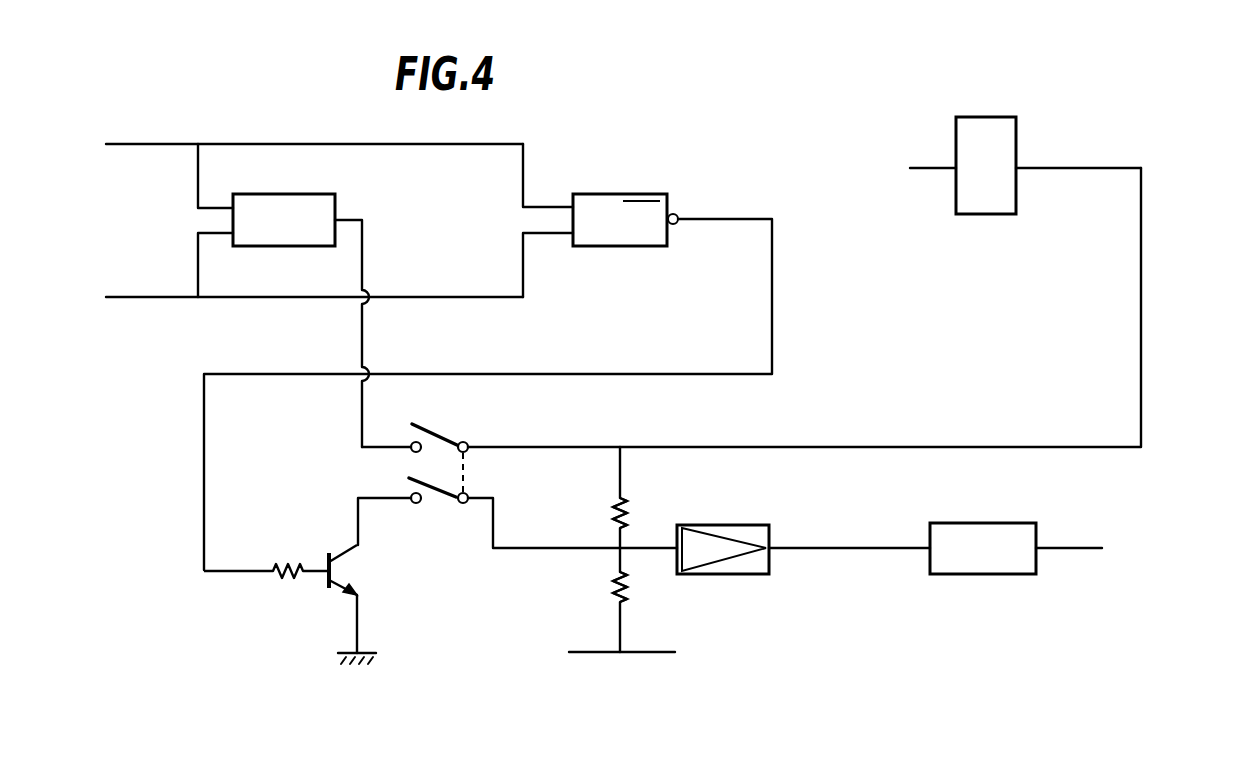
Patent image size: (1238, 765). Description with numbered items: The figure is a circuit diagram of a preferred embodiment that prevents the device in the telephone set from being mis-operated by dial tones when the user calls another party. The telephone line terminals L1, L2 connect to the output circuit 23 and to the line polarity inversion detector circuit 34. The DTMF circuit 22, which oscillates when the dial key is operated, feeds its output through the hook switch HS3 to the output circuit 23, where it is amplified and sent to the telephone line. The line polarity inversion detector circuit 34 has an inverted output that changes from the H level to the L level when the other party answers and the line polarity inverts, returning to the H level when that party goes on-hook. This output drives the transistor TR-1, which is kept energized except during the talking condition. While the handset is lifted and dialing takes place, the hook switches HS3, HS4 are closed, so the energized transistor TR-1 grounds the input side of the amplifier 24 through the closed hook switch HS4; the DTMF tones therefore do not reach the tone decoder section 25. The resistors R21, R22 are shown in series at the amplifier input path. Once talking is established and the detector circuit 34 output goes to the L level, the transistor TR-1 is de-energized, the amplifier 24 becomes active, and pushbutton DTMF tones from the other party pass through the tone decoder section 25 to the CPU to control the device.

The DTMF circuit 22 is at (978, 117).
The output circuit 23 is at (266, 194).
The amplifier 24 is at (720, 525).
The tone decoder section 25 is at (975, 523).
The line polarity inversion detector circuit 34 is at (603, 194).
The hook switch HS3 is at (439, 443).
The hook switch HS4 is at (438, 508).
The transistor TR-1 is at (305, 570).
The resistor R21 is at (639, 514).
The resistor R22 is at (639, 587).
The telephone line terminal L1 is at (314, 129).
The telephone line terminal L2 is at (314, 281).